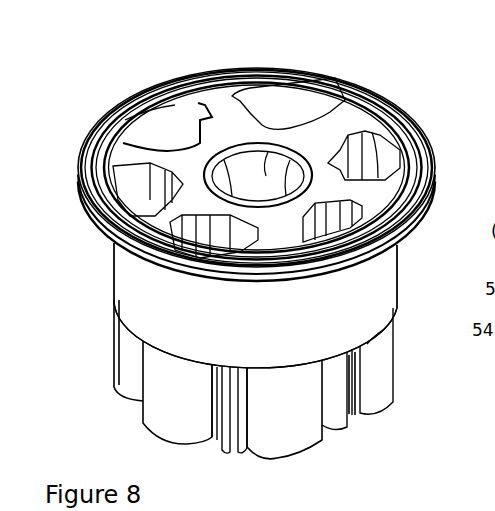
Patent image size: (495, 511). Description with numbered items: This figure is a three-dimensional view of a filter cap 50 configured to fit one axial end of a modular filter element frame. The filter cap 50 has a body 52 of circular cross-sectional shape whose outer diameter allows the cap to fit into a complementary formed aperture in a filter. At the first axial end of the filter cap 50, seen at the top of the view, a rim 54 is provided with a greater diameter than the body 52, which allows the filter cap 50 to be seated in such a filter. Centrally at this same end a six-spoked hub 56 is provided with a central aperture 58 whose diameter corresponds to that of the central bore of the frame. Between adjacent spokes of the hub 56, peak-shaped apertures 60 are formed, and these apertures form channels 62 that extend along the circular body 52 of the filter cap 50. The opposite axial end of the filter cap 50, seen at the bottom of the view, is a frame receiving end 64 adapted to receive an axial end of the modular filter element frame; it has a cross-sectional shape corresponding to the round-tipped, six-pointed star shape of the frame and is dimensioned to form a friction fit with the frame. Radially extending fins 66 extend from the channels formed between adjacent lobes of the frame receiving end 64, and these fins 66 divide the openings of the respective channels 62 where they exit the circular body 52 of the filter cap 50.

The filter cap 50 is at (84, 67).
The body 52 is at (127, 272).
The rim 54 is at (80, 187).
The six-spoked hub 56 is at (316, 134).
The central aperture 58 is at (272, 174).
The peak-shaped apertures 60 is at (364, 210).
The channels 62 is at (176, 128).
The frame receiving end 64 is at (111, 360).
The radially extending fins 66 is at (355, 412).